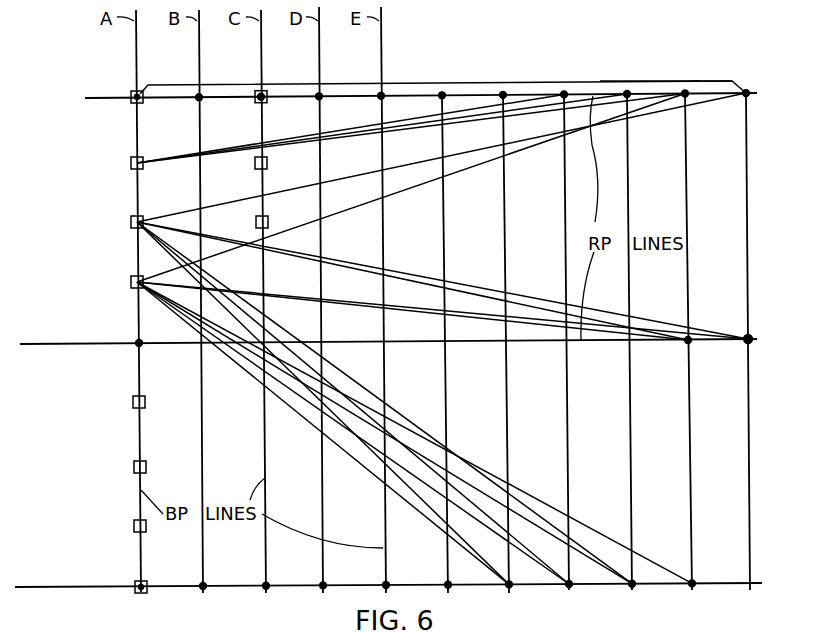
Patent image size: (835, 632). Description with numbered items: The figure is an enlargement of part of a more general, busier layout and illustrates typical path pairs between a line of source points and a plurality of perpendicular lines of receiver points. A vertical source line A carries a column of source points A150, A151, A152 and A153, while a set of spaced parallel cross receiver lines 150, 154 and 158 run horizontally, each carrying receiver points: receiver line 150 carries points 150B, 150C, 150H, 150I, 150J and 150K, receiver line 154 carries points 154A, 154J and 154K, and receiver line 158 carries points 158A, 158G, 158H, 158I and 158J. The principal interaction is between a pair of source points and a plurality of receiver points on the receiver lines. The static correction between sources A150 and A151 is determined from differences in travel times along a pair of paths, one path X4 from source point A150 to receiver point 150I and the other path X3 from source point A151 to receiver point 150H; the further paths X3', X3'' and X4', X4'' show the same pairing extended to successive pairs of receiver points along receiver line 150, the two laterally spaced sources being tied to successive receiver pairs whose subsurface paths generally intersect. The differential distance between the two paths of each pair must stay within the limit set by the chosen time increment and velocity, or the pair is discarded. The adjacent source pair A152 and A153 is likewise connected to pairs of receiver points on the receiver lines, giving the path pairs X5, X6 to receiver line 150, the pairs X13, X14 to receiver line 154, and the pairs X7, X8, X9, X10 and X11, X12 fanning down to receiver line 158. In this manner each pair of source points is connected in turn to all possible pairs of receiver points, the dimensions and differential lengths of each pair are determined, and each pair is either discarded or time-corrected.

The receiver point line 150 is at (85, 98).
The path X4 is at (443, 68).
The path X4' is at (650, 45).
The path X4'' is at (714, 44).
The source point A150 is at (130, 104).
The source point A151 is at (130, 168).
The source point A152 is at (130, 227).
The source point A153 is at (130, 284).
The receiver point 150B is at (200, 95).
The receiver point 150C is at (265, 92).
The receiver point 150H is at (564, 92).
The receiver point 150I is at (628, 92).
The receiver point 150J is at (686, 91).
The receiver point 150K is at (747, 91).
The path X3 is at (350, 128).
The path X3' is at (382, 128).
The path X3'' is at (411, 129).
The path X6 is at (368, 172).
The path X5 is at (303, 225).
The receiver point line 154 is at (65, 343).
The receiver point 154A is at (137, 341).
The receiver point 154J is at (688, 338).
The receiver point 154K is at (748, 338).
The path X14 is at (458, 290).
The path X13 is at (482, 310).
The receiver point line 158 is at (61, 587).
The receiver point 158A is at (140, 584).
The receiver point 158G is at (505, 582).
The receiver point 158H is at (572, 580).
The receiver point 158I is at (635, 580).
The receiver point 158J is at (694, 580).
The path X7 is at (388, 420).
The path X8 is at (297, 341).
The path X12 is at (396, 478).
The path X11 is at (431, 488).
The path X9 is at (432, 461).
The path X10 is at (476, 507).